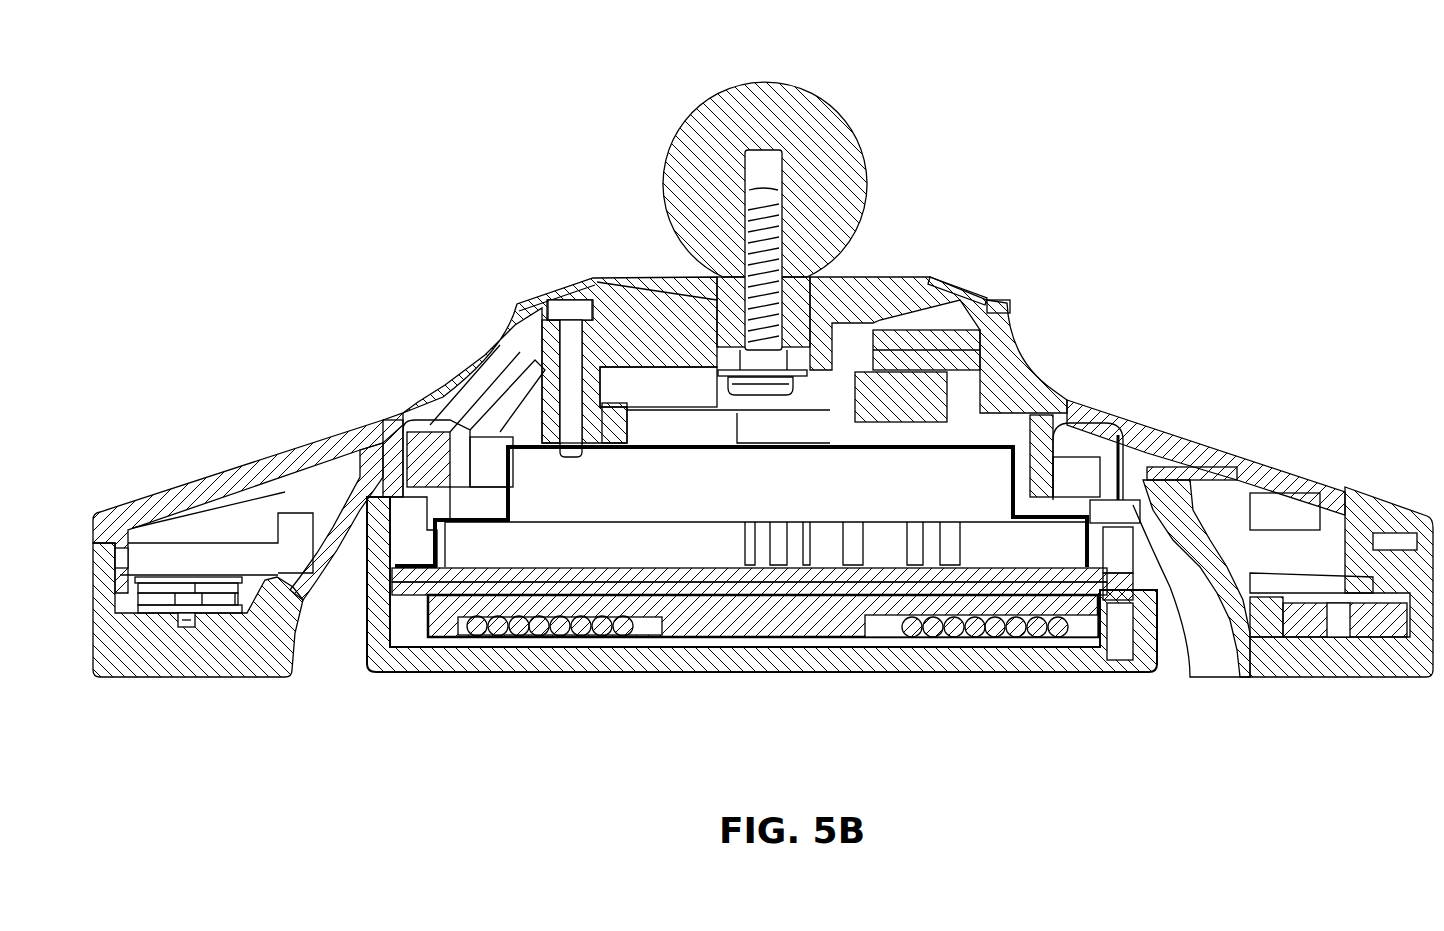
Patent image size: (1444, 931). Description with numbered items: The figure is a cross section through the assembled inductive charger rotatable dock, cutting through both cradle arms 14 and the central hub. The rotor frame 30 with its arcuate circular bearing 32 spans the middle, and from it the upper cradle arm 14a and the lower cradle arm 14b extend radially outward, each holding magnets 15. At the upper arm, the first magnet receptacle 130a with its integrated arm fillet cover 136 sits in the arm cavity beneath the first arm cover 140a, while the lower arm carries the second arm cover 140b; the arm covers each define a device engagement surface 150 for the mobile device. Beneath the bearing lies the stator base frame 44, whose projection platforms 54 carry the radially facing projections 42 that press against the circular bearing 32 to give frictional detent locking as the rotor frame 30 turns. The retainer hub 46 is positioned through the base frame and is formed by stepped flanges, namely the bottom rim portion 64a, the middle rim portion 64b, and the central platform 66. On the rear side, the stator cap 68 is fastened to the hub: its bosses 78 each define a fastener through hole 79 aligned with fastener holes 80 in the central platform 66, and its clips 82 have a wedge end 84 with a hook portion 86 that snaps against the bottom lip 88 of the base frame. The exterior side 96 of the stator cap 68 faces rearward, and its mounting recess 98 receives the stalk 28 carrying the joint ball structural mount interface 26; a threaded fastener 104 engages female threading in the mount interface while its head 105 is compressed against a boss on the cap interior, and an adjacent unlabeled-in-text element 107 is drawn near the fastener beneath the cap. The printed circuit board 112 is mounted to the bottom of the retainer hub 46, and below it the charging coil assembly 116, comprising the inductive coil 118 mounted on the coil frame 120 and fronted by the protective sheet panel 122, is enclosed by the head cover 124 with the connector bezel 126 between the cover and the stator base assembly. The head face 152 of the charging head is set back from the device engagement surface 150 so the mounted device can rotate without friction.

The cradle arms 14 is at (763, 518).
The upper cradle arm 14a is at (183, 497).
The lower cradle arm 14b is at (1217, 440).
The magnets 15 is at (220, 637).
The structural mount interface 26 is at (853, 133).
The stalk 28 is at (797, 307).
The rotor frame 30 is at (1199, 418).
The circular bearing 32 is at (422, 430).
The projections 42 is at (403, 440).
The stator base frame 44 is at (378, 512).
The retainer hub 46 is at (573, 535).
The projection platforms 54 is at (410, 490).
The bottom rim portion 64a is at (423, 567).
The middle rim portion 64b is at (473, 522).
The central platform 66 is at (650, 450).
The stator cap 68 is at (1002, 308).
The bosses 78 is at (548, 312).
The fastener through hole 79 is at (571, 350).
The fastener holes 80 is at (570, 459).
The clips 82 is at (1047, 430).
The wedge end 84 is at (1115, 490).
The hook portion 86 is at (1057, 485).
The bottom lip 88 is at (1066, 497).
The exterior side 96 is at (976, 272).
The mounting recess 98 is at (663, 297).
The threaded fastener 104 is at (780, 258).
The head 105 is at (575, 317).
The block 107 is at (650, 293).
The printed circuit board 112 is at (1025, 603).
The charging coil assembly 116 is at (722, 616).
The inductive coil 118 is at (953, 635).
The coil frame 120 is at (823, 614).
The protective sheet panel 122 is at (770, 630).
The head cover 124 is at (905, 650).
The connector bezel 126 is at (1187, 680).
The first magnet receptacle 130a is at (140, 620).
The arm fillet cover 136 is at (358, 535).
The first arm cover 140a is at (160, 655).
The second arm cover 140b is at (1328, 650).
The device engagement surface 150 is at (190, 655).
The head face 152 is at (972, 640).